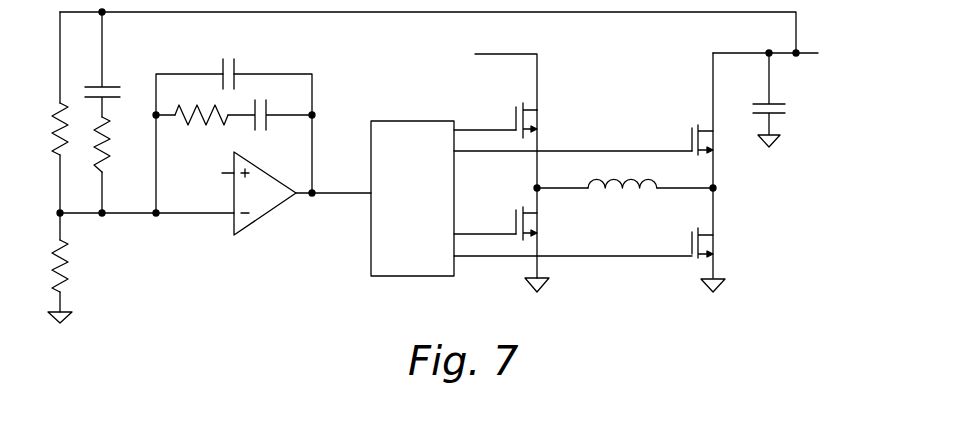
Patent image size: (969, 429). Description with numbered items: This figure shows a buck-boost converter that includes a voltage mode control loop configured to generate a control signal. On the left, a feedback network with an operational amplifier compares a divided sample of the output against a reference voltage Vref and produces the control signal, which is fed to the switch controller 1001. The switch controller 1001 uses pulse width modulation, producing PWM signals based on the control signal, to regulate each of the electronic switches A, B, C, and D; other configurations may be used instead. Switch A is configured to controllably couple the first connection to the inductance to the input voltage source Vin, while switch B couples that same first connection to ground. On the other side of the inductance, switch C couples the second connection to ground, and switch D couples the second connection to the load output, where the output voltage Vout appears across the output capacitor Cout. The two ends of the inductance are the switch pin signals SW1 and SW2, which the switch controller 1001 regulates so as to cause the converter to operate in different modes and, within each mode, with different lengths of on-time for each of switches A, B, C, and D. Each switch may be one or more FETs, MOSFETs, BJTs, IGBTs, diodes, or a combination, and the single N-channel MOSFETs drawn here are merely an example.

The switch controller 1001 is at (410, 121).
The electronic switch A is at (535, 120).
The electronic switch B is at (535, 223).
The electronic switch C is at (711, 243).
The electronic switch D is at (712, 140).
The switch pin signal SW1 is at (562, 180).
The switch pin signal SW2 is at (685, 180).
The input voltage Vin is at (490, 77).
The output voltage Vout is at (783, 55).
The output capacitor Cout is at (788, 100).
The reference voltage Vref is at (212, 174).